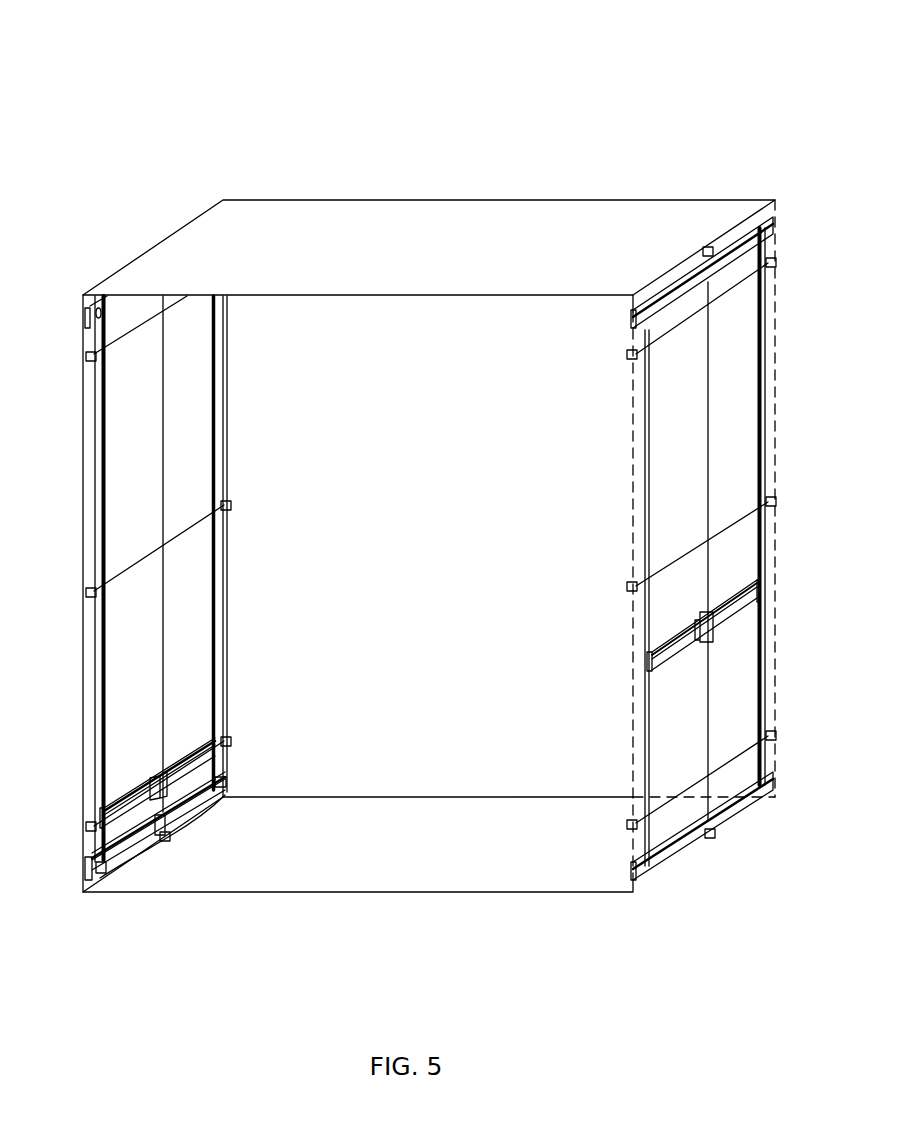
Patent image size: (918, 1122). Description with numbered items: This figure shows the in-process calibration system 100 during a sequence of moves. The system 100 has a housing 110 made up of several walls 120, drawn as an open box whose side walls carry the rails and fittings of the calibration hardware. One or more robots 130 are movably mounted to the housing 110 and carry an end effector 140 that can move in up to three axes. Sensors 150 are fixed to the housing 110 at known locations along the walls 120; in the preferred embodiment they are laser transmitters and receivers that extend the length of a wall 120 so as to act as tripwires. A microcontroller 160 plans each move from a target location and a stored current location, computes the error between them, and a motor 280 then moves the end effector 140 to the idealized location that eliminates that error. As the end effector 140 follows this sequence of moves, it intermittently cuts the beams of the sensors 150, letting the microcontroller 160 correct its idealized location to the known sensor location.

The in-process calibration system 100 is at (140, 52).
The housing 110 is at (227, 200).
The walls 120 is at (411, 264).
The robot 130 is at (86, 864).
The end effector 140 is at (155, 778).
The sensor 150 is at (87, 358).
The microcontroller 160 is at (166, 826).
The motor 280 is at (225, 785).